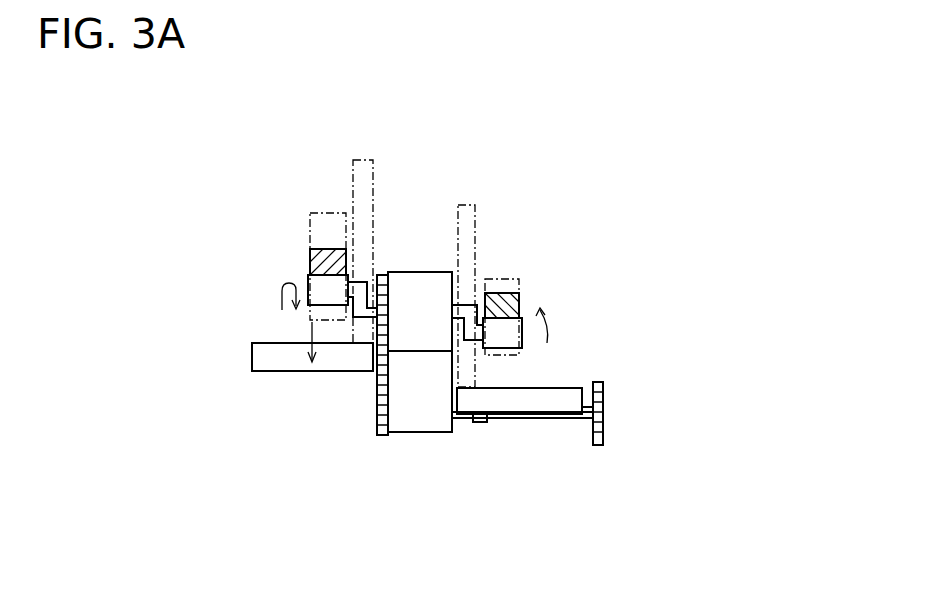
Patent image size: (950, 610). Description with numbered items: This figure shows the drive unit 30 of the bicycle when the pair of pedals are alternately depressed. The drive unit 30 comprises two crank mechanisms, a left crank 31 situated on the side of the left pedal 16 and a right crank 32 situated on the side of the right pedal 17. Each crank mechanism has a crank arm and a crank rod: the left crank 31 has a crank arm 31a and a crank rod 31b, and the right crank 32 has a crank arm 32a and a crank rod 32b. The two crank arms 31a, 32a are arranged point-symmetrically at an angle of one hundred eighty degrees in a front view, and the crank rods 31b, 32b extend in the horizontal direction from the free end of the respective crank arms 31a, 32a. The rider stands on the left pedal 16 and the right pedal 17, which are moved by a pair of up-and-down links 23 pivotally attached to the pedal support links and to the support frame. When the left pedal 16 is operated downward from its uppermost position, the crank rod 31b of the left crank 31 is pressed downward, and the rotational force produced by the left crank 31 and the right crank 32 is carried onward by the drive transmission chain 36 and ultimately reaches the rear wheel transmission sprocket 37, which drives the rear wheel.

The left pedal 16 is at (263, 360).
The right pedal 17 is at (532, 402).
The up-and-down link 23 is at (312, 262).
The drive unit 30 is at (400, 287).
The left crank 31 is at (318, 285).
The crank arm 31a is at (365, 308).
The crank rod 31b is at (323, 293).
The right crank 32 is at (512, 325).
The crank arm 32a is at (463, 302).
The crank rod 32b is at (507, 333).
The drive transmission chain 36 is at (383, 373).
The rear wheel transmission sprocket 37 is at (603, 408).